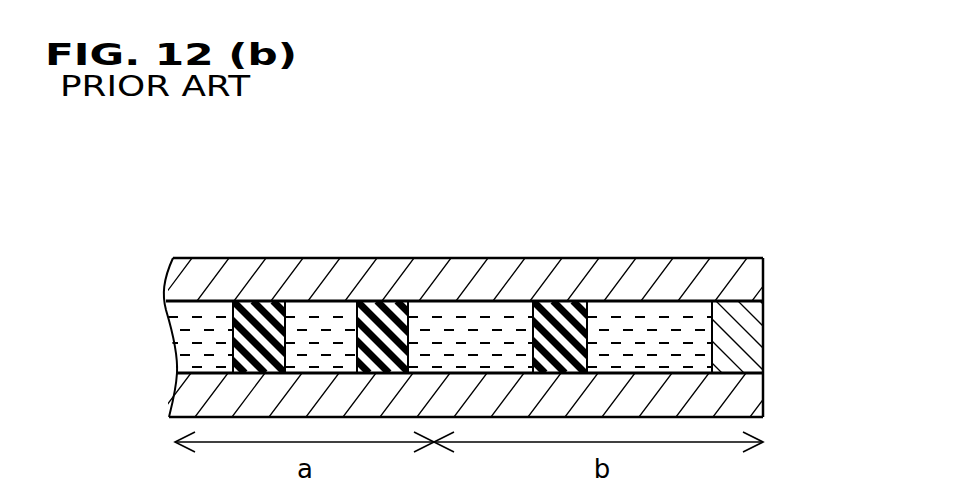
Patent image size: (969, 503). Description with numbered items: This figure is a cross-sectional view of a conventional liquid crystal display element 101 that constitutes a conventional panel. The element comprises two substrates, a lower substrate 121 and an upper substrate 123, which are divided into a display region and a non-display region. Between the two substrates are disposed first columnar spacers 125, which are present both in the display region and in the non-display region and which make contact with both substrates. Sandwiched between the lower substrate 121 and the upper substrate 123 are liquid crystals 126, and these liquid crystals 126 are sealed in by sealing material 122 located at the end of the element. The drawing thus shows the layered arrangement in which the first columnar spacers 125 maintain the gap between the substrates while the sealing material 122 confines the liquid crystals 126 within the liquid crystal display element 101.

The liquid crystal display element 101 is at (507, 271).
The lower substrate 121 is at (752, 393).
The sealing material 122 is at (512, 277).
The upper substrate 123 is at (752, 282).
The first columnar spacers 125 is at (373, 303).
The liquid crystals 126 is at (470, 315).